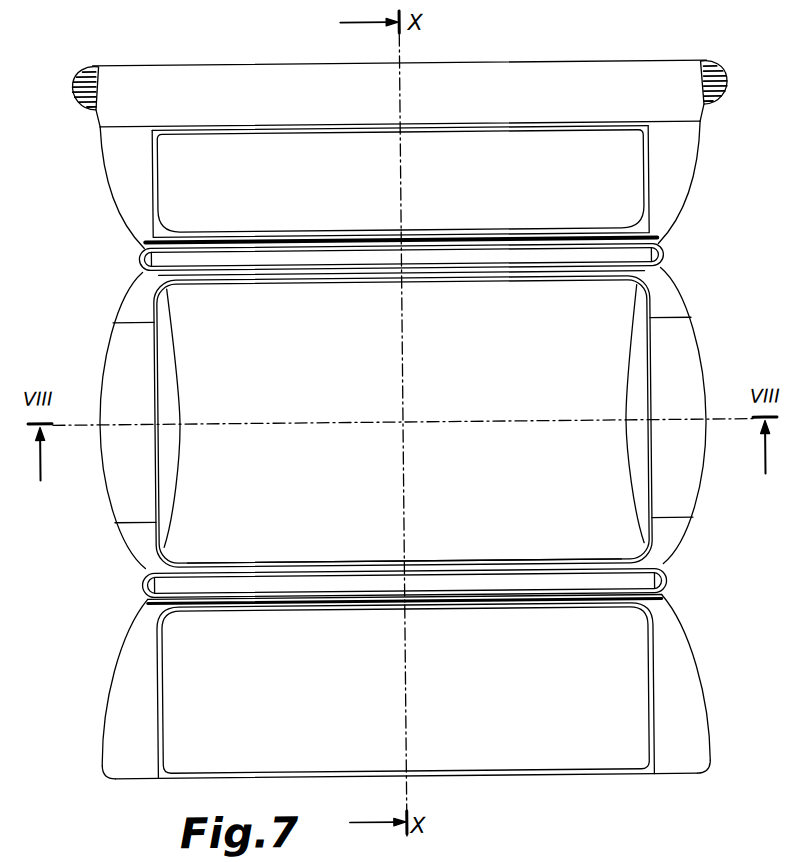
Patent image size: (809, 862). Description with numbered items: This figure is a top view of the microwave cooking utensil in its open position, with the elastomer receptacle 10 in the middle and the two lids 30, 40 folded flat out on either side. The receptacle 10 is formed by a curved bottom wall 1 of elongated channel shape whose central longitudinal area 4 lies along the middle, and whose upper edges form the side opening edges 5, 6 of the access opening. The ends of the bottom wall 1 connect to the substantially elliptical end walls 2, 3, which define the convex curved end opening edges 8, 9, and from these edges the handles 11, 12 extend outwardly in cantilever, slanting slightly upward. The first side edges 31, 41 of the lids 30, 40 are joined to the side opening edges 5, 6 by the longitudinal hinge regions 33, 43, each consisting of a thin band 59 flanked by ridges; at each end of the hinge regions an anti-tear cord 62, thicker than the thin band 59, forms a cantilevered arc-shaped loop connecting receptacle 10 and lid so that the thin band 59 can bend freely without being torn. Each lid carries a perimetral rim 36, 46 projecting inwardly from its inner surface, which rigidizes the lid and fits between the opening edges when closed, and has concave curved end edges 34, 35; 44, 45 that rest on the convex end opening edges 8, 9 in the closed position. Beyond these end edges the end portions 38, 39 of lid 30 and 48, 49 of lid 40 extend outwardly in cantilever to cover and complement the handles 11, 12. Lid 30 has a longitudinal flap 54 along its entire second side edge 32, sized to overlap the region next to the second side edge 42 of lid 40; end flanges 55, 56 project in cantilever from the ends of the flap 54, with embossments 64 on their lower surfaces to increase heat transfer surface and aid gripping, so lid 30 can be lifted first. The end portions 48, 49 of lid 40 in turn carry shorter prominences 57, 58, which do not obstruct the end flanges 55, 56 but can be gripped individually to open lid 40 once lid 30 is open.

The bottom wall 1 is at (579, 320).
The end wall 2 is at (170, 388).
The end wall 3 is at (635, 384).
The central longitudinal area 4 is at (353, 412).
The side opening edge 5 is at (479, 278).
The side opening edge 6 is at (352, 560).
The end opening edge 8 is at (157, 446).
The end opening edge 9 is at (650, 442).
The receptacle 10 is at (82, 334).
The handle 11 is at (111, 372).
The handle 12 is at (694, 366).
The lid 30 is at (497, 44).
The first side edge 31 is at (335, 231).
The second side edge 32 is at (500, 129).
The hinge region 33 is at (690, 259).
The concave curved end edge 34 is at (154, 195).
The concave curved end edge 35 is at (649, 190).
The perimetral rim 36 is at (157, 168).
The end portion 38 is at (110, 142).
The end portion 39 is at (690, 165).
The lid 40 is at (498, 796).
The first side edge 41 is at (480, 609).
The second side edge 42 is at (585, 779).
The hinge region 43 is at (118, 583).
The concave curved end edge 44 is at (153, 708).
The concave curved end edge 45 is at (654, 695).
The perimetral rim 46 is at (158, 680).
The end portion 48 is at (135, 762).
The end portion 49 is at (672, 758).
The longitudinal flap 54 is at (270, 63).
The end flange 55 is at (75, 84).
The end flange 56 is at (728, 91).
The prominence 57 is at (99, 764).
The prominence 58 is at (706, 771).
The thin band 59 is at (289, 266).
The anti-tear cord 62 is at (140, 257).
The embossments 64 is at (83, 64).